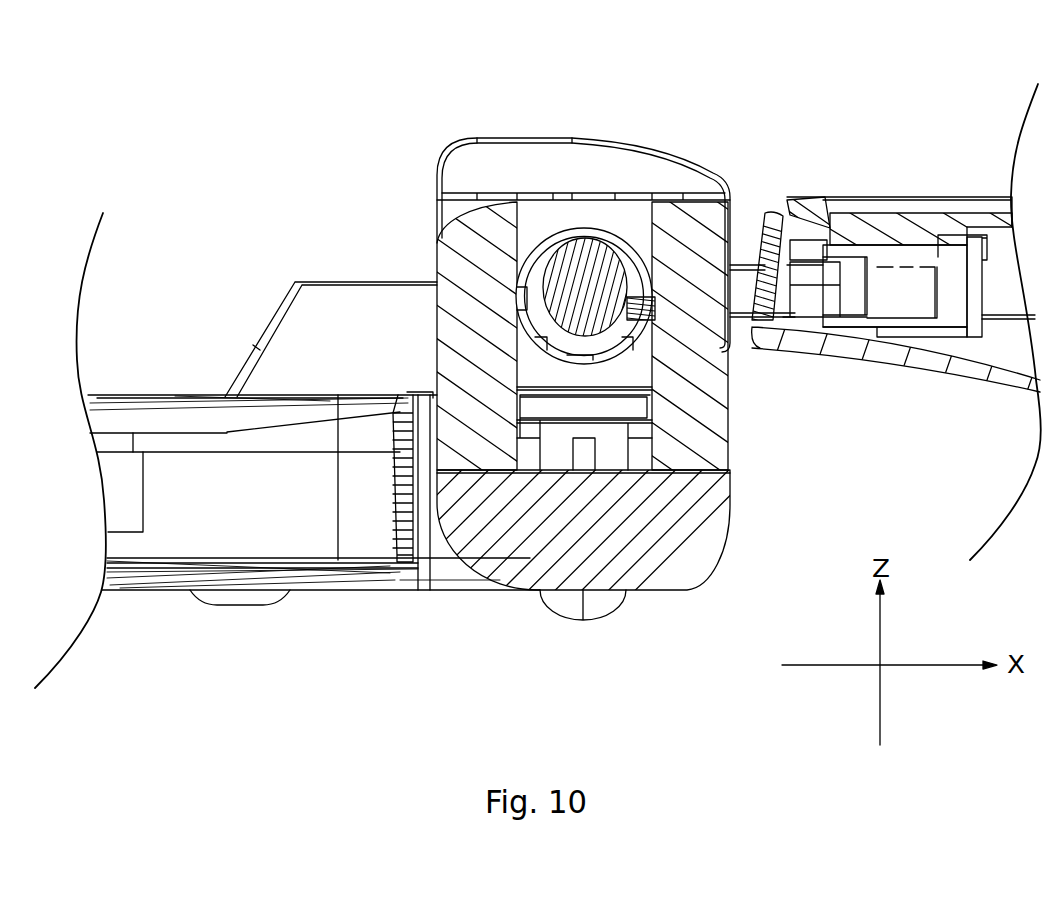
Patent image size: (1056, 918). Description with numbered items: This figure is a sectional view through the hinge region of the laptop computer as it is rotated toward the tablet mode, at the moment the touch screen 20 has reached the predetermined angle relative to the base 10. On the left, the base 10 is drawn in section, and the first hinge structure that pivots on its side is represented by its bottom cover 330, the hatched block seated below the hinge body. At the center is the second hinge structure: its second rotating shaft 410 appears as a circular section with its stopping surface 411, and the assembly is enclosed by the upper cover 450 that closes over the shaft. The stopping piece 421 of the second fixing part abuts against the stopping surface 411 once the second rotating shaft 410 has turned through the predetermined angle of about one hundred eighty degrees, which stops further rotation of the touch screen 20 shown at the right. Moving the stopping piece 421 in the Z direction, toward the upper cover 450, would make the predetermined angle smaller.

The base 10 is at (175, 613).
The touch screen 20 is at (918, 162).
The bottom cover 330 is at (662, 535).
The second rotating shaft 410 is at (585, 278).
The stopping surface 411 is at (650, 296).
The stopping piece 421 is at (727, 395).
The upper cover 450 is at (445, 235).